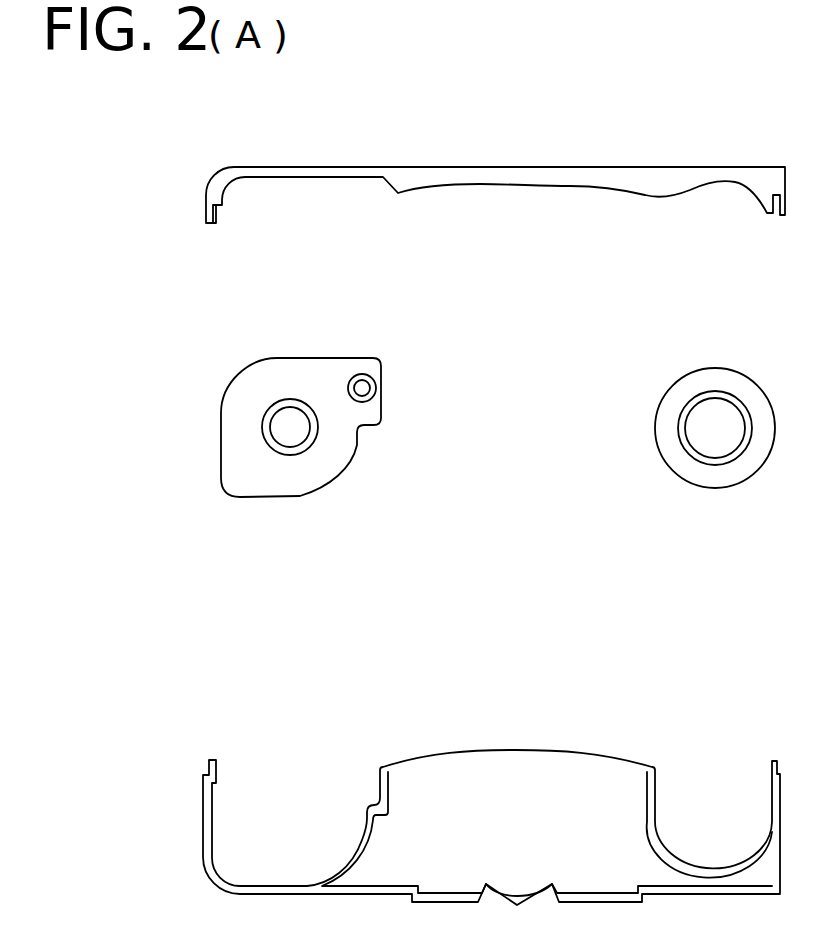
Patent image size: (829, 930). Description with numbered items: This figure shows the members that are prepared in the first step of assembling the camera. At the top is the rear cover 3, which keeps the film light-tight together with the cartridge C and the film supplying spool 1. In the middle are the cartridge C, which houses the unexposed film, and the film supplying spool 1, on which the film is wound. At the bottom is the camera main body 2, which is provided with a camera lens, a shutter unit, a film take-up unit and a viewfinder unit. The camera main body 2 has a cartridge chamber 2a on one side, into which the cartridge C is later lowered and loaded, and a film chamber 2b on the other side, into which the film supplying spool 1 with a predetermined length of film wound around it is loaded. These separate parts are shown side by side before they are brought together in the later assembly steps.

The film supplying spool 1 is at (715, 368).
The camera main body 2 is at (508, 750).
The cartridge chamber 2a is at (278, 798).
The film chamber 2b is at (703, 795).
The rear cover 3 is at (493, 165).
The cartridge C is at (297, 358).